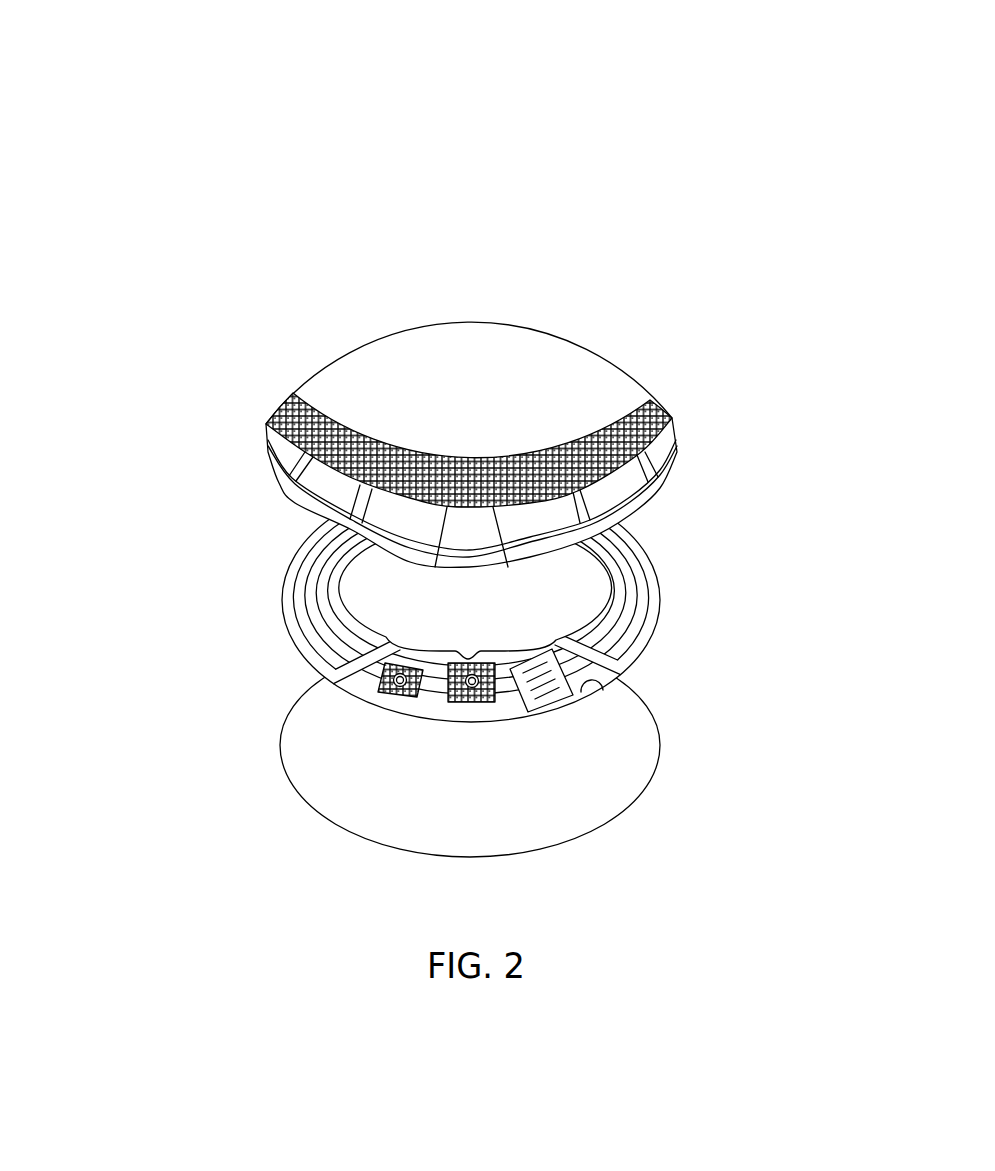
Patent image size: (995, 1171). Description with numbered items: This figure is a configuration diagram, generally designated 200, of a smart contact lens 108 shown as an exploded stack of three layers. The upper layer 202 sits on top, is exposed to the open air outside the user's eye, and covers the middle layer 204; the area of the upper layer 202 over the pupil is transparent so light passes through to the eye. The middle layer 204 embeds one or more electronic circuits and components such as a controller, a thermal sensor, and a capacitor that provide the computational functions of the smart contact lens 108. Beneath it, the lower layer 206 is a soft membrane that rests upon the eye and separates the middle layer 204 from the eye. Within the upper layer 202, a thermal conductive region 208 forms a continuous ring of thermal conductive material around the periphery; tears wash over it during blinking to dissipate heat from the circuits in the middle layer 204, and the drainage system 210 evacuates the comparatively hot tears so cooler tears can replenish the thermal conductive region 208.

The configuration of a smart contact lens 200 is at (499, 440).
The smart contact lens 108 is at (489, 514).
The upper layer 202 is at (536, 394).
The middle layer 204 is at (283, 583).
The lower layer 206 is at (283, 762).
The thermal conductive region 208 is at (275, 302).
The drainage system 210 is at (676, 440).